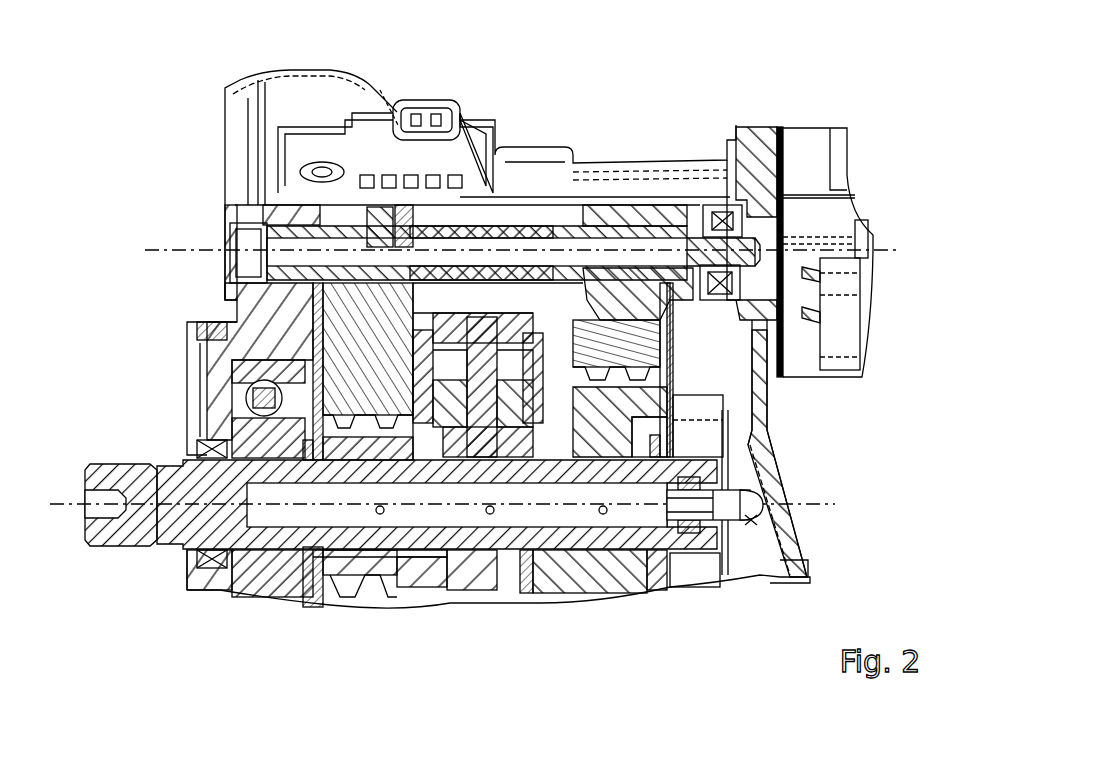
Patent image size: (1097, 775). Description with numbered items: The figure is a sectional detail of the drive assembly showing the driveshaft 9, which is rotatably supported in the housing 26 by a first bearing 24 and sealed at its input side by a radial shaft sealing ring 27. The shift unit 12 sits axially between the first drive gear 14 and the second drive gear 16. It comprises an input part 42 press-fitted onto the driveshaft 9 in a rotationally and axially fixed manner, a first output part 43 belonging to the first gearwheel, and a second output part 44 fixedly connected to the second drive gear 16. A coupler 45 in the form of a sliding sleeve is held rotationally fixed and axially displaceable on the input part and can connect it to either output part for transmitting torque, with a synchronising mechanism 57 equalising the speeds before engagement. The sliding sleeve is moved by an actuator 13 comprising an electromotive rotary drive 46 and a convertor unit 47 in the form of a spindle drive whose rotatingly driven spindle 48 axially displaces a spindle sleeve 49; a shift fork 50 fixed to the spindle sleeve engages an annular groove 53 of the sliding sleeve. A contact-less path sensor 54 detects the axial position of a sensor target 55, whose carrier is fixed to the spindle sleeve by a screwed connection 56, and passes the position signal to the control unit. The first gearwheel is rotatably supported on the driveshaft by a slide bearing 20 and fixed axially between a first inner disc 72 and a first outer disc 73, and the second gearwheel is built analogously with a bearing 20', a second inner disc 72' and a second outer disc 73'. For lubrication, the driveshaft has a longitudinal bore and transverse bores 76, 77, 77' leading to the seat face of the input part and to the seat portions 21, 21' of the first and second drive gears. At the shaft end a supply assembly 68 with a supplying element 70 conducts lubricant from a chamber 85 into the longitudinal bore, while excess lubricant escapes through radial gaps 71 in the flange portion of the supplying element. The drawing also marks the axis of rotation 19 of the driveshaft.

The driveshaft 9 is at (470, 548).
The shift unit 12 is at (538, 165).
The actuator 13 is at (768, 120).
The first drive gear 14 is at (360, 592).
The second drive gear 16 is at (707, 398).
The axis of rotation 19 is at (58, 503).
The bearing 20 is at (490, 488).
The bearing 20' is at (590, 603).
The seat portion 21 is at (395, 629).
The seat portion 21' is at (629, 637).
The first bearing 24 is at (235, 403).
The housing 26 is at (187, 330).
The radial shaft sealing ring 27 is at (197, 455).
The input part 42 is at (505, 425).
The first output part 43 is at (443, 300).
The second output part 44 is at (593, 310).
The coupler 45 is at (547, 330).
The electromotive rotary drive 46 is at (843, 182).
The convertor unit 47 is at (690, 185).
The spindle 48 is at (665, 195).
The spindle sleeve 49 is at (322, 180).
The shift fork 50 is at (565, 335).
The annular groove 53 is at (498, 330).
The sensor 54 is at (427, 100).
The sensor target 55 is at (348, 200).
The screwed connection 56 is at (386, 205).
The synchronising mechanism 57 is at (473, 330).
The supply assembly 68 is at (755, 520).
The supplying element 70 is at (740, 487).
The radial gaps 71 is at (745, 455).
The first inner disc 72 is at (464, 626).
The second inner disc 72' is at (536, 627).
The first outer disc 73 is at (290, 551).
The second outer disc 73' is at (683, 603).
The transverse bore 76 is at (492, 515).
The transverse bore 77 is at (349, 581).
The transverse bore 77' is at (639, 576).
The chamber 85 is at (752, 506).